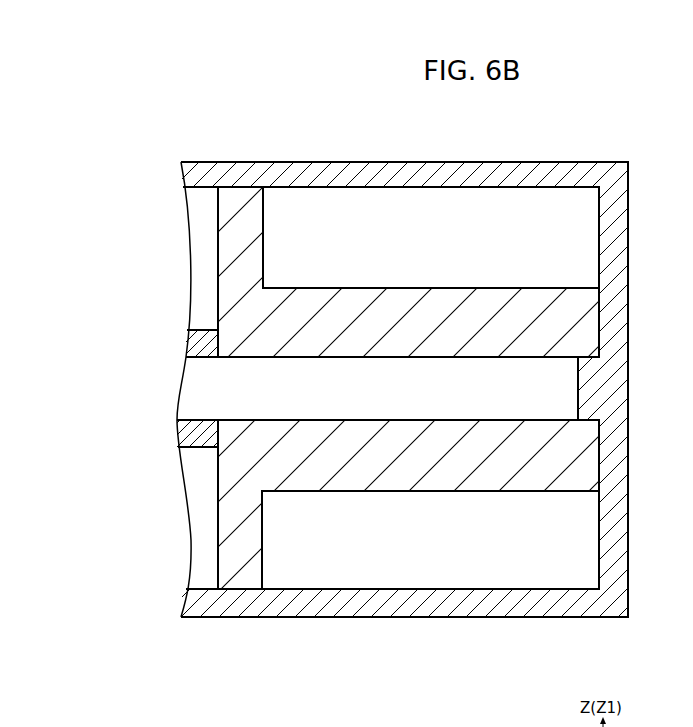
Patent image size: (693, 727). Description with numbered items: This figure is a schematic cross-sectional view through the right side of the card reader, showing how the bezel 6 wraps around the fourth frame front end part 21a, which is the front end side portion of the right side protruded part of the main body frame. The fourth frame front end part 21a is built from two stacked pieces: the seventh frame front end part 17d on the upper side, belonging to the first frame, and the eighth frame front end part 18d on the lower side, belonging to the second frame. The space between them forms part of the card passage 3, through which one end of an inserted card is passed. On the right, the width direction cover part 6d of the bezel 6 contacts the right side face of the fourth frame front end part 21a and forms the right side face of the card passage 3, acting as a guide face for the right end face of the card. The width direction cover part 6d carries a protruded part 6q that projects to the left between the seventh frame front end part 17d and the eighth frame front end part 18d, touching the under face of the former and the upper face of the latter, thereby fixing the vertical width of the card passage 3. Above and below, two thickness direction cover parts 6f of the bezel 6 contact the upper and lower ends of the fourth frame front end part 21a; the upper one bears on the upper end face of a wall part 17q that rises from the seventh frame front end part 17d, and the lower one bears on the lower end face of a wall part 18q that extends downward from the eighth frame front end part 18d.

The card passage 3 is at (338, 401).
The bezel 6 is at (570, 162).
The width direction cover part 6d is at (628, 252).
The thickness direction cover part 6f is at (405, 162).
The protruded part 6q is at (578, 390).
The seventh frame front end part 17d is at (473, 288).
The wall part 17q is at (263, 230).
The eighth frame front end part 18d is at (453, 491).
The wall part 18q is at (262, 550).
The fourth frame front end part 21a is at (246, 162).